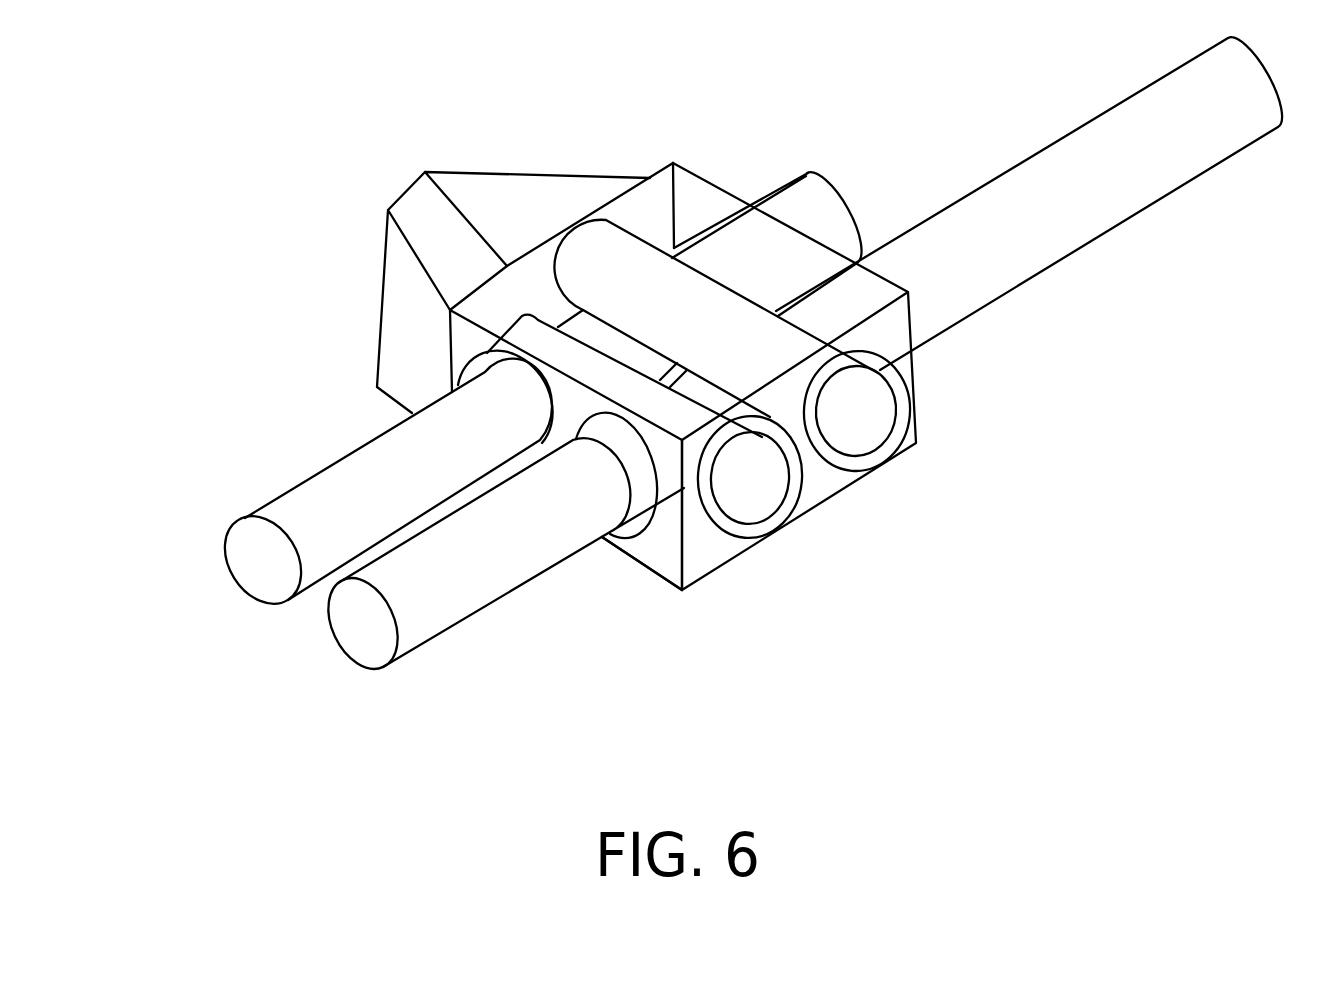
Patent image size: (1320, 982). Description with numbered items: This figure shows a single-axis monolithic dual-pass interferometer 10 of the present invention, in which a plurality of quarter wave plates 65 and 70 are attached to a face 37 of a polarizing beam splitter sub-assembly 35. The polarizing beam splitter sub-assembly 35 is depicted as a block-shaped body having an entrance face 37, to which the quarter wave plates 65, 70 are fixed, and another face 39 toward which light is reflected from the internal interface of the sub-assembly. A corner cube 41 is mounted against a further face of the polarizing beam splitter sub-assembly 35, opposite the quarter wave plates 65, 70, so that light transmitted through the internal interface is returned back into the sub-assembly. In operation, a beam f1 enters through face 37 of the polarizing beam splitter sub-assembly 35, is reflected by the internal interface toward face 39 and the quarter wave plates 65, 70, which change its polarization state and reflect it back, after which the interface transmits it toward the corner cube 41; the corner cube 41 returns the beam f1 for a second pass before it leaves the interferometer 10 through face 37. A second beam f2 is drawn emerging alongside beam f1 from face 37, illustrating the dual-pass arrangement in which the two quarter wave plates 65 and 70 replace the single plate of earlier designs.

The single-axis monolithic dual-pass interferometer 10 is at (691, 122).
The corner cube 41 is at (418, 212).
The polarizing beam splitter sub-assembly 35 is at (610, 538).
The face 37 is at (662, 547).
The face 39 is at (683, 548).
The quarter wave plate 65 is at (860, 468).
The quarter wave plate 70 is at (738, 530).
The beam f1 is at (372, 495).
The second fiber f2 is at (499, 578).